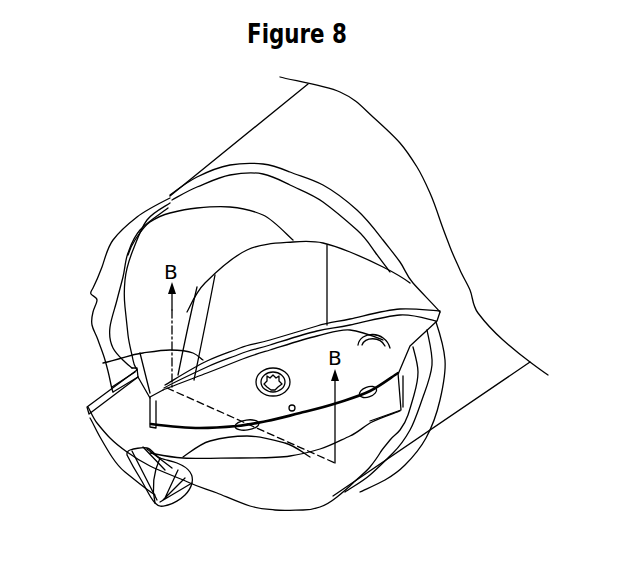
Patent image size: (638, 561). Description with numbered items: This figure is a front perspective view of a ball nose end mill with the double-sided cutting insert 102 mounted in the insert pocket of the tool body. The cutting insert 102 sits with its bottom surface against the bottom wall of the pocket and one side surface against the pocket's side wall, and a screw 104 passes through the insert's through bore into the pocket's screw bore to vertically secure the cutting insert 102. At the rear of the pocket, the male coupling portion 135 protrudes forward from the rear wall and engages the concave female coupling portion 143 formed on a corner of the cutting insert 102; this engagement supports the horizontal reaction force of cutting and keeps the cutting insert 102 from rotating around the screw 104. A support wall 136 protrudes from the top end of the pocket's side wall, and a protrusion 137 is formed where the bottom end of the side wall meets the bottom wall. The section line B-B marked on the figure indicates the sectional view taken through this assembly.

The cutting insert 102 is at (378, 411).
The screw 104 is at (283, 373).
The male coupling portion 135 is at (398, 356).
The support wall 136 is at (103, 363).
The protrusion 137 is at (134, 443).
The female coupling portion 143 is at (392, 345).